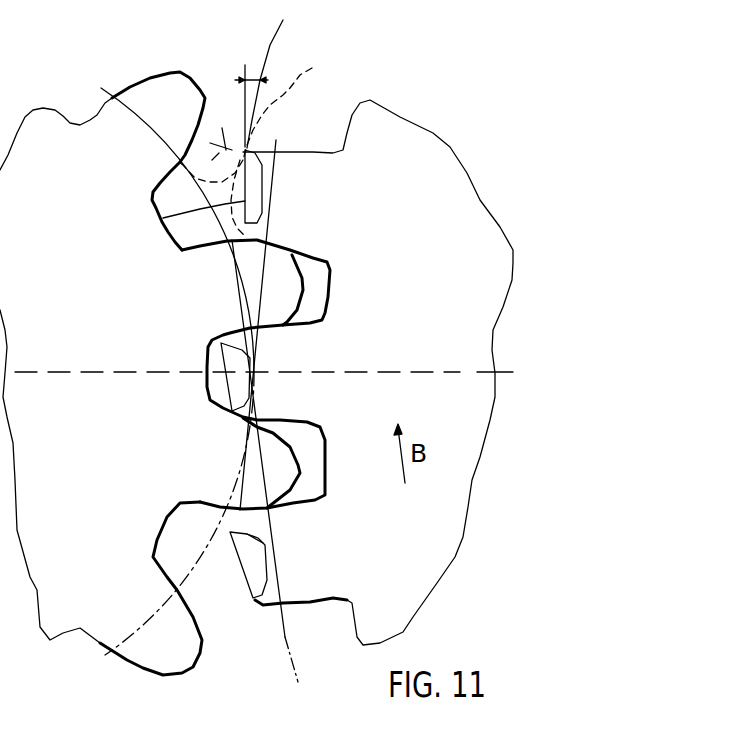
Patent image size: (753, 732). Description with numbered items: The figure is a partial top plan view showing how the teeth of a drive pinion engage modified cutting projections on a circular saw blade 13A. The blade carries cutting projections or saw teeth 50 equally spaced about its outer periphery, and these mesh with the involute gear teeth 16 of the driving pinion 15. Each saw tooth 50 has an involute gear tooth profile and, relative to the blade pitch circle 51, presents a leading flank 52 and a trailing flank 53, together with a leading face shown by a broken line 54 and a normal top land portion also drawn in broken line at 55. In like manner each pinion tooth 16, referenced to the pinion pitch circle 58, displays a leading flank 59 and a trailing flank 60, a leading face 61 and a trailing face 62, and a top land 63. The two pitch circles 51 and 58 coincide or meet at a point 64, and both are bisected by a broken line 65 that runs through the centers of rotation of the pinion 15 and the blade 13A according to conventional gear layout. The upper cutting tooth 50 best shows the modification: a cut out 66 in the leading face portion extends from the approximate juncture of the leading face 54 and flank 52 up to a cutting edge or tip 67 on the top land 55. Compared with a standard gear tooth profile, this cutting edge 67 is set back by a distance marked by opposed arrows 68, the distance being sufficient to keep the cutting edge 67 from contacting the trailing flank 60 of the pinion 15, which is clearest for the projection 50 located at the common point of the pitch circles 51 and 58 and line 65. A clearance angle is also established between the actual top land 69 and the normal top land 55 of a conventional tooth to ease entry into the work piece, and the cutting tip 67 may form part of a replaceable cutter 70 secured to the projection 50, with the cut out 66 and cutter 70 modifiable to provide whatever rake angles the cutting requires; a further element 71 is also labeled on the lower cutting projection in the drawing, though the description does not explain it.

The circular saw blade 13A is at (441, 239).
The pinion 15 is at (96, 460).
The teeth 16 is at (181, 115).
The saw teeth 50 is at (319, 201).
The pitch circle 51 is at (310, 657).
The leading flank 52 is at (350, 118).
The trailing flank 53 is at (312, 256).
The leading face 54 is at (294, 108).
The top land portion 55 is at (180, 163).
The pitch circle 58 is at (109, 678).
The leading flank 59 is at (173, 577).
The trailing flank 60 is at (102, 647).
The leading face 61 is at (199, 635).
The trailing face 62 is at (155, 663).
The top land 63 is at (193, 662).
The meeting point of pitch circles 64 is at (252, 373).
The center line 65 is at (463, 345).
The cut out 66 is at (267, 167).
The cutting edge 67 is at (276, 140).
The opposed arrows 68 is at (233, 148).
The actual top land 69 is at (163, 218).
The replaceable cutter 70 is at (240, 380).
The engaging surface 71 is at (242, 504).